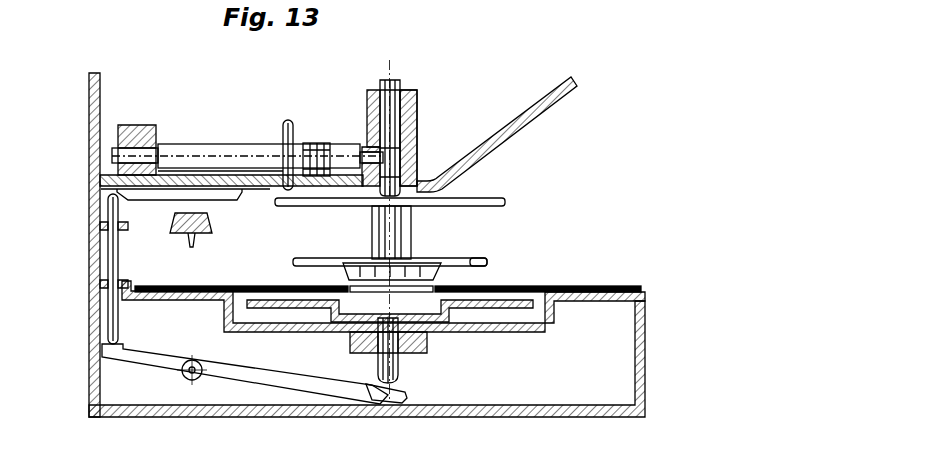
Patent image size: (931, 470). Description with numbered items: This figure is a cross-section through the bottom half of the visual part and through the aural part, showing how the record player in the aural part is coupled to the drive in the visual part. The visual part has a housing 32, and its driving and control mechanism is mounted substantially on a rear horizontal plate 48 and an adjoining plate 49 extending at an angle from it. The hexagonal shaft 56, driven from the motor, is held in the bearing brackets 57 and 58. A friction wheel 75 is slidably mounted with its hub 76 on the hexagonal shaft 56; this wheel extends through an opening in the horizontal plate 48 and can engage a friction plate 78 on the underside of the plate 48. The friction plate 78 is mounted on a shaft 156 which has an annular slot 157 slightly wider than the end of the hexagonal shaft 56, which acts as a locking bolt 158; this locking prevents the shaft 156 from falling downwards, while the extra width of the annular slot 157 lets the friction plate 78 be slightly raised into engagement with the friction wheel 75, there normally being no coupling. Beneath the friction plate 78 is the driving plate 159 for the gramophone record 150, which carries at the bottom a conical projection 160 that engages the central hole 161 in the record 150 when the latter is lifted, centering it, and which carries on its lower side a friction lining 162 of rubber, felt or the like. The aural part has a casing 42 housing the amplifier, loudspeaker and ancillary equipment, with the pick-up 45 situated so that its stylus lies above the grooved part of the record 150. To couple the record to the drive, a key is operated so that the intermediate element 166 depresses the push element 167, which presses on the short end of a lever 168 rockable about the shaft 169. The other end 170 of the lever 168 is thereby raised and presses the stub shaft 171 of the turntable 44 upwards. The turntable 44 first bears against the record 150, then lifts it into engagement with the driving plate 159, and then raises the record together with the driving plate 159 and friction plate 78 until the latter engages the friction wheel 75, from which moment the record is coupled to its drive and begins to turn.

The housing 32 is at (90, 138).
The casing 42 is at (93, 342).
The rear horizontal plate 48 is at (100, 176).
The intermediate element 166 is at (213, 198).
The pick-up 45 is at (210, 237).
The push element 167 is at (118, 242).
The bearing bracket 57 is at (147, 130).
The hexagonal shaft 56 is at (180, 155).
The friction wheel 75 is at (290, 135).
The hub 76 is at (318, 142).
The locking bolt 158 is at (366, 128).
The bearing bracket 58 is at (417, 102).
The annular slot 157 is at (417, 143).
The shaft 156 is at (398, 80).
The plate 49 is at (523, 113).
The friction plate 78 is at (290, 205).
The conical projection 160 is at (420, 265).
The driving plate 159 is at (468, 260).
The friction lining 162 is at (487, 265).
The central hole 161 is at (350, 285).
The gramophone record 150 is at (525, 288).
The turntable 44 is at (470, 307).
The stub shaft 171 is at (397, 372).
The end of the lever 170 is at (407, 397).
The lever 168 is at (130, 358).
The shaft 169 is at (185, 377).